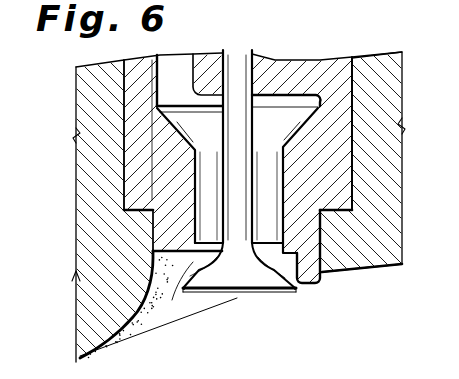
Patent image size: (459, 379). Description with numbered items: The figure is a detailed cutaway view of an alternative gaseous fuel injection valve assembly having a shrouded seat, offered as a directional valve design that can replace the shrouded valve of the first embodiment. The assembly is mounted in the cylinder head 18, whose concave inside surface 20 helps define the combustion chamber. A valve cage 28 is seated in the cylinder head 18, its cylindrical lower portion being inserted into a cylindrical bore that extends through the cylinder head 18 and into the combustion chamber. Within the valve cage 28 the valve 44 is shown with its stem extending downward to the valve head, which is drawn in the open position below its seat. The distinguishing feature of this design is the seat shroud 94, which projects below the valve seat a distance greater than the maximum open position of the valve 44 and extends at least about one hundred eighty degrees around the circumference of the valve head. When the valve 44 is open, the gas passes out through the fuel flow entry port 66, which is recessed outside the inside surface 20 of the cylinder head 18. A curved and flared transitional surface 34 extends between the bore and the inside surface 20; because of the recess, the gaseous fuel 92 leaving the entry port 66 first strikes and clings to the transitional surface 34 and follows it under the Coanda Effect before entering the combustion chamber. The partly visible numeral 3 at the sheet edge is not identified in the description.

The cylinder head 18 is at (98, 162).
The valve cage 28 is at (313, 66).
The valve 44 is at (258, 181).
The seat shroud 94 is at (310, 284).
The fuel flow entry port 66 is at (154, 323).
The transitional surface 34 is at (143, 297).
The gaseous fuel 92 is at (158, 316).
The inside surface 20 is at (78, 350).
The unknown 3 is at (454, 341).